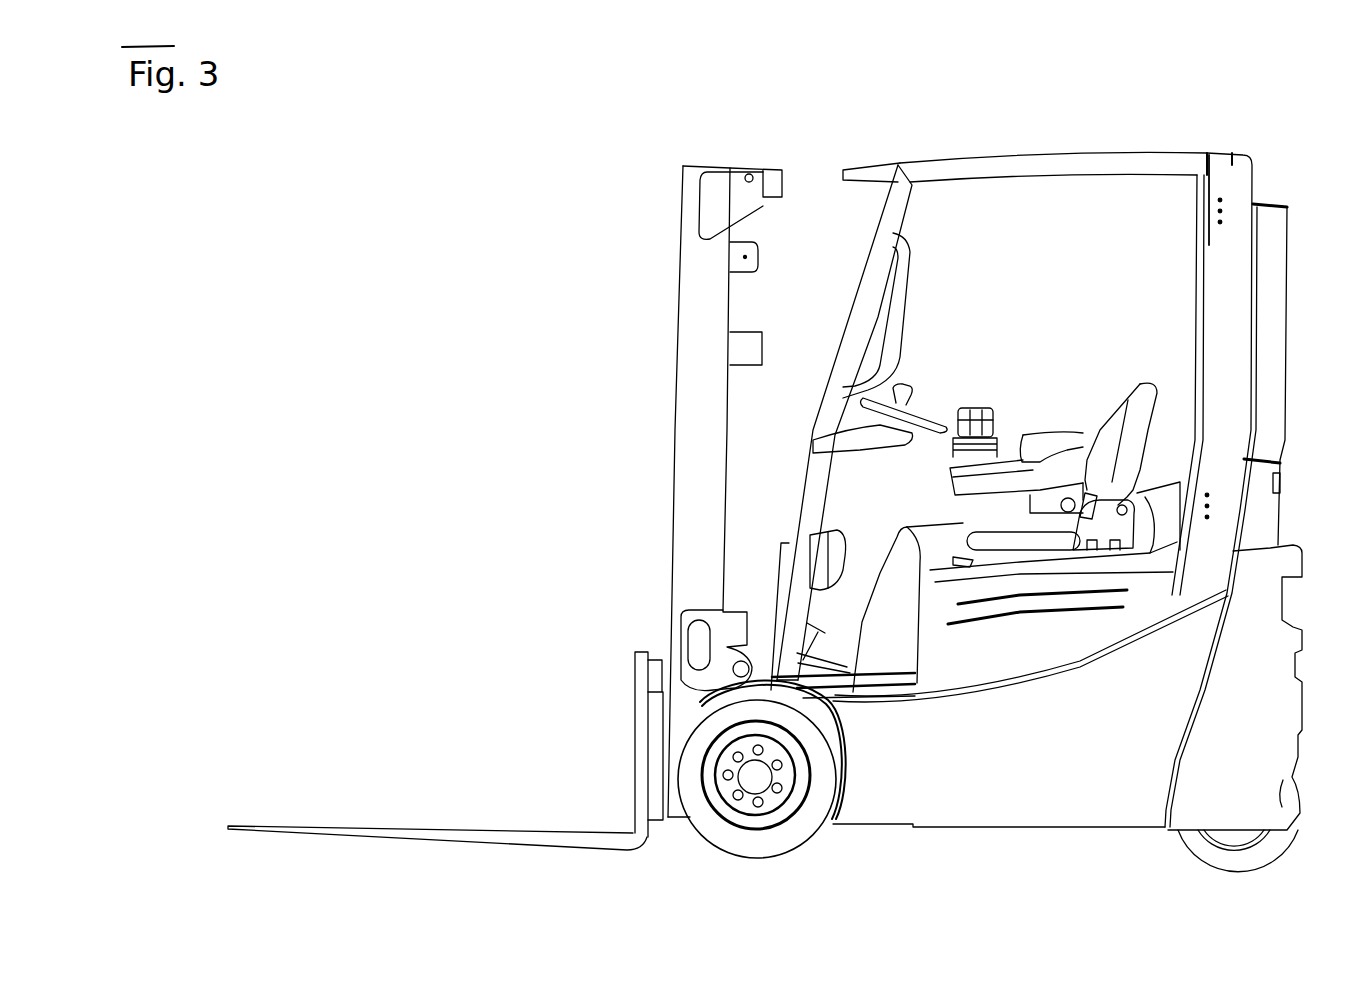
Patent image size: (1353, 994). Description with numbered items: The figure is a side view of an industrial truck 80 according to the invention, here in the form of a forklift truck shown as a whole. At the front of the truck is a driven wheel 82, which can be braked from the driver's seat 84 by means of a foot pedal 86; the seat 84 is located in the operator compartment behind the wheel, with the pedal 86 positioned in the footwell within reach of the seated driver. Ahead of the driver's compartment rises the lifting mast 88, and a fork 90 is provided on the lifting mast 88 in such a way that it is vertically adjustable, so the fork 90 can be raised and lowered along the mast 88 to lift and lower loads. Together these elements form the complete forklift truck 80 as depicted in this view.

The industrial truck 80 is at (522, 180).
The driven wheel 82 is at (744, 846).
The driver's seat 84 is at (1029, 367).
The foot pedal 86 is at (820, 638).
The lifting mast 88 is at (697, 455).
The fork 90 is at (410, 835).